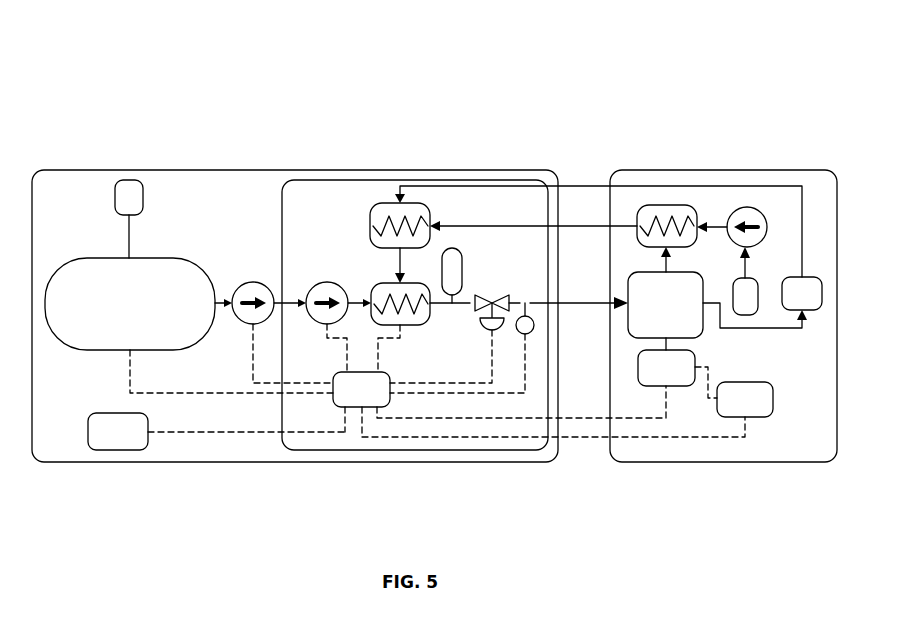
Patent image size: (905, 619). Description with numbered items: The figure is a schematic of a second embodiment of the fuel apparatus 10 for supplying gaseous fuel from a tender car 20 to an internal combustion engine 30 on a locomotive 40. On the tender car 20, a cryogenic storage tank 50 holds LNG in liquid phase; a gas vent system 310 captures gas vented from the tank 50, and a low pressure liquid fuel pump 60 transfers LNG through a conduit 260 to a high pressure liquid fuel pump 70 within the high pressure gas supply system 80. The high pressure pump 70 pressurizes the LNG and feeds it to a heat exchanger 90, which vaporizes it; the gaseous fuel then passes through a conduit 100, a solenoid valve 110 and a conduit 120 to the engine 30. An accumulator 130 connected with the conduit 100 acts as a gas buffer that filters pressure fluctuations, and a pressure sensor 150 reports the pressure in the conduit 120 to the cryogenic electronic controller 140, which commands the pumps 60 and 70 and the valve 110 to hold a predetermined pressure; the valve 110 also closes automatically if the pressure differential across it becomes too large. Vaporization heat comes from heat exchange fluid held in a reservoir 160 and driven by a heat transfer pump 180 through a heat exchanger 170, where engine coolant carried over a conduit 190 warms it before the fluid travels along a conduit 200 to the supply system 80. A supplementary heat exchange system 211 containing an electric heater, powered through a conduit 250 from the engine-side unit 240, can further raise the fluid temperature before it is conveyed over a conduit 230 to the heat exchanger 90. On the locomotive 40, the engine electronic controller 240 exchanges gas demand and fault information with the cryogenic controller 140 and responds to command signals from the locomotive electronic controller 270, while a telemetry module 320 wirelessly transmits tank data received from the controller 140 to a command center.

The fuel apparatus 10 is at (97, 66).
The tender car 20 is at (78, 170).
The internal combustion engine 30 is at (703, 336).
The locomotive 40 is at (700, 170).
The cryogenic storage tank 50 is at (100, 258).
The low pressure liquid fuel pump 60 is at (256, 282).
The high pressure liquid fuel pump 70 is at (327, 282).
The high pressure gas supply system 80 is at (326, 180).
The heat exchanger 90 is at (410, 326).
The conduit 100 is at (448, 304).
The solenoid valve 110 is at (495, 296).
The conduit 120 is at (583, 303).
The accumulator 130 is at (463, 258).
The cryogenic electronic controller 140 is at (340, 372).
The pressure sensor 150 is at (534, 327).
The reservoir 160 is at (756, 278).
The heat exchanger 170 is at (667, 205).
The heat transfer pump 180 is at (747, 207).
The conduit 190 is at (668, 266).
The conduit 200 is at (580, 226).
The heat exchange system 211 is at (430, 218).
The conduit 230 is at (678, 387).
The engine electronic controller 240 is at (811, 311).
The conduit 250 is at (585, 186).
The conduit 260 is at (290, 304).
The locomotive electronic controller 270 is at (768, 382).
The gas vent system 310 is at (143, 198).
The telemetry module 320 is at (92, 414).